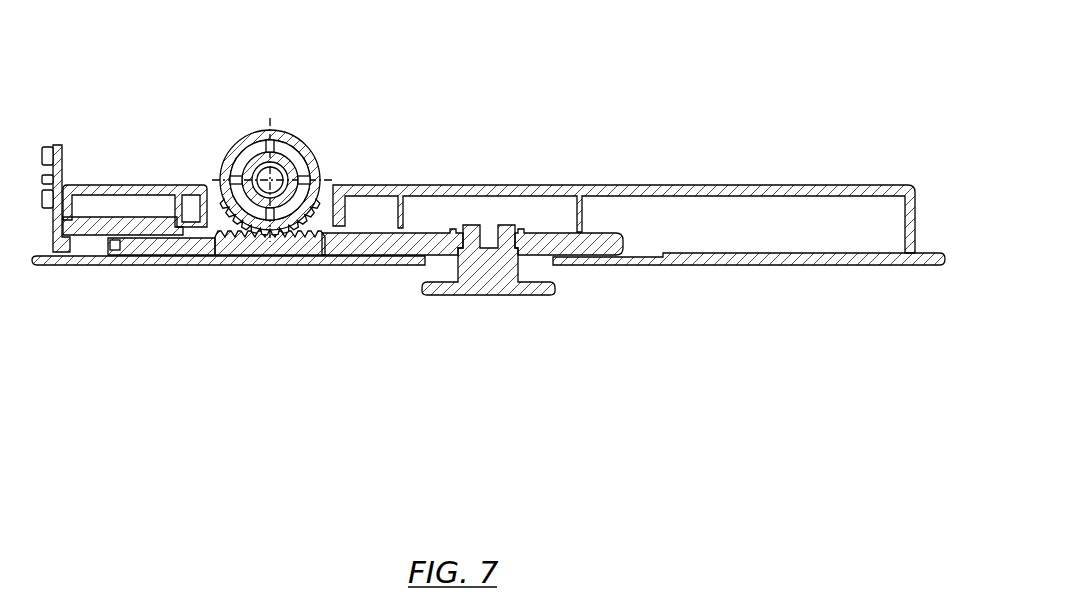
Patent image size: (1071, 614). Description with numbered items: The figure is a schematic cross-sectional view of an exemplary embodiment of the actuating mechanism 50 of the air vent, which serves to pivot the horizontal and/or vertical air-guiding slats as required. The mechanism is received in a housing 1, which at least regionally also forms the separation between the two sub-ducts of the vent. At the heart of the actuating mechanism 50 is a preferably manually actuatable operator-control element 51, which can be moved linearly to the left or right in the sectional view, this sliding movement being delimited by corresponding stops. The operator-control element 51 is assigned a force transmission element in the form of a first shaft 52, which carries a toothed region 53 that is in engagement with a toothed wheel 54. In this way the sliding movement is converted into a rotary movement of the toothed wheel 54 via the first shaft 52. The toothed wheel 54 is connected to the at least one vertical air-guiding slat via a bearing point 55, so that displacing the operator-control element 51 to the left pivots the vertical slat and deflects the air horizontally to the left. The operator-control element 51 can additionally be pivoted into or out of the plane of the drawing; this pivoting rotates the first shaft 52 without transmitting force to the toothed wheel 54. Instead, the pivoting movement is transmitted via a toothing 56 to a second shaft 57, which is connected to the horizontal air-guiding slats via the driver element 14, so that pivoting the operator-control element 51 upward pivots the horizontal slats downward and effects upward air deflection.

The housing 1 is at (108, 190).
The driver element 14 is at (64, 178).
The actuating mechanism 50 is at (610, 98).
The operator-control element 51 is at (483, 278).
The first shaft 52 is at (367, 235).
The toothed region 53 is at (230, 237).
The toothed wheel 54 is at (318, 178).
The bearing point 55 is at (283, 170).
The toothing 56 is at (118, 238).
The second shaft 57 is at (117, 222).